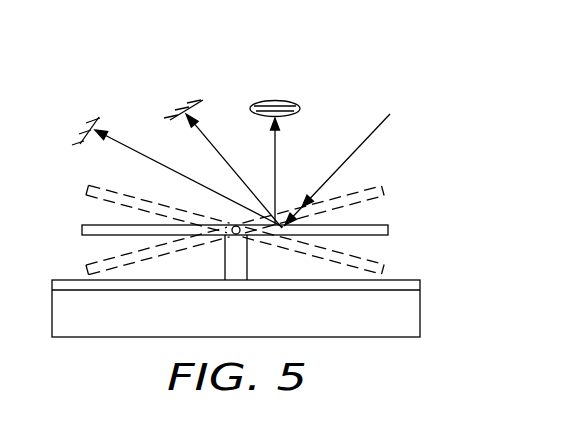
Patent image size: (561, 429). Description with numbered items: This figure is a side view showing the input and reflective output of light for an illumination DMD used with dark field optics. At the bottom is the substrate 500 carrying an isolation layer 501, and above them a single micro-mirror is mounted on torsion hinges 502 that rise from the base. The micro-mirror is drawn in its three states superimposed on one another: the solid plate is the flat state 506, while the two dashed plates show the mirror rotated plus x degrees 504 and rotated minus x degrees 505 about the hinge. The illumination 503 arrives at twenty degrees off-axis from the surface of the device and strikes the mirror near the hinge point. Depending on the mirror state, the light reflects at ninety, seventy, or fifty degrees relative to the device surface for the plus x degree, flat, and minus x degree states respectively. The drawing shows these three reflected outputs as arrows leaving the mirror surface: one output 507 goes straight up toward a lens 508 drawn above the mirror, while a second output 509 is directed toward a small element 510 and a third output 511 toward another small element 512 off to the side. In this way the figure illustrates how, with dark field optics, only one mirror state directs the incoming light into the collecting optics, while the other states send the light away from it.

The substrate 500 is at (372, 327).
The isolation layer 501 is at (64, 286).
The torsion hinges 502 is at (235, 274).
The illumination 503 is at (368, 139).
The micro-mirror rotated +x degrees 504 is at (85, 188).
The micro-mirror rotated −x degrees 505 is at (387, 187).
The flat micro-mirror 506 is at (390, 231).
The reflected beam to lens 507 is at (278, 150).
The lens 508 is at (287, 101).
The reflected beam in first tilted position 509 is at (133, 142).
The first absorber 510 is at (86, 129).
The reflected beam in second tilted position 511 is at (216, 150).
The second absorber 512 is at (185, 108).